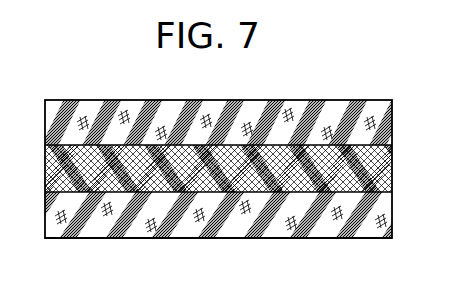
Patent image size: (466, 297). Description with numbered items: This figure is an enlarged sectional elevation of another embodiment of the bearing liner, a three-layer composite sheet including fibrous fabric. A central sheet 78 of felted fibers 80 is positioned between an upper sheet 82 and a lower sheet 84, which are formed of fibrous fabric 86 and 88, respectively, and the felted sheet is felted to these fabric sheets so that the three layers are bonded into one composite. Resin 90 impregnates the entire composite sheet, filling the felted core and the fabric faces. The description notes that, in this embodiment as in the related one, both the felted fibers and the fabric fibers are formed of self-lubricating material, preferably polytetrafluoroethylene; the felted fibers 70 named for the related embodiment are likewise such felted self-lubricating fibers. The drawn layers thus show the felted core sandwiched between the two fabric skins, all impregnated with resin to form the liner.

The felted fibers 70 is at (403, 91).
The sheet of felted fibers 78 is at (434, 170).
The felted fibers 80 is at (43, 162).
The sheet of fibrous fabric 82 is at (205, 104).
The sheet of fibrous fabric 84 is at (45, 220).
The fibrous fabric 86 is at (199, 80).
The fibrous fabric 88 is at (246, 239).
The resin 90 is at (282, 74).